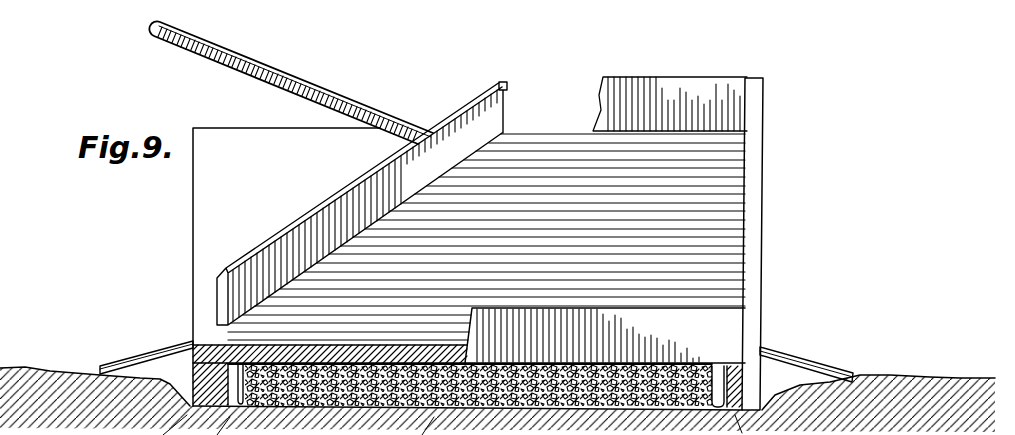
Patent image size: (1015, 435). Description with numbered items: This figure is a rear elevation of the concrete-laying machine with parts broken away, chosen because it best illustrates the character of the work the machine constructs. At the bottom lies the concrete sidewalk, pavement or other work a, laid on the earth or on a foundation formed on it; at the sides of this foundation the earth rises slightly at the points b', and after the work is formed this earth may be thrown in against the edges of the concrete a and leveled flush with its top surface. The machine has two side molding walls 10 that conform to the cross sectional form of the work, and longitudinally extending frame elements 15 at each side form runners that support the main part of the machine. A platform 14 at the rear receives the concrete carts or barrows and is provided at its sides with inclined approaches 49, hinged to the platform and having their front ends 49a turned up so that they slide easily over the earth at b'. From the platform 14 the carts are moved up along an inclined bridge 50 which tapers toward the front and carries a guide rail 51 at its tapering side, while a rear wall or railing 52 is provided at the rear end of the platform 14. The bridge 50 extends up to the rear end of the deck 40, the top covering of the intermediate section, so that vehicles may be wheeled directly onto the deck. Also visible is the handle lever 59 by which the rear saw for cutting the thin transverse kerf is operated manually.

The deck 40 is at (271, 125).
The handle lever 59 is at (335, 106).
The guide rail 51 is at (354, 189).
The inclined bridge 50 is at (562, 117).
The rear wall or railing 52 is at (707, 294).
The concrete sidewalk a is at (396, 362).
The platform 14 is at (446, 353).
The frame elements 15 is at (192, 345).
The side molding walls 10 is at (722, 367).
The inclined approaches 49 is at (100, 371).
The front ends of approaches 49a is at (853, 357).
The earth at sides b' is at (497, 381).